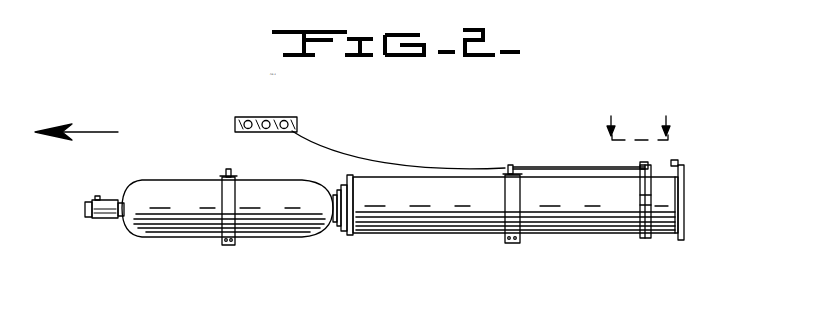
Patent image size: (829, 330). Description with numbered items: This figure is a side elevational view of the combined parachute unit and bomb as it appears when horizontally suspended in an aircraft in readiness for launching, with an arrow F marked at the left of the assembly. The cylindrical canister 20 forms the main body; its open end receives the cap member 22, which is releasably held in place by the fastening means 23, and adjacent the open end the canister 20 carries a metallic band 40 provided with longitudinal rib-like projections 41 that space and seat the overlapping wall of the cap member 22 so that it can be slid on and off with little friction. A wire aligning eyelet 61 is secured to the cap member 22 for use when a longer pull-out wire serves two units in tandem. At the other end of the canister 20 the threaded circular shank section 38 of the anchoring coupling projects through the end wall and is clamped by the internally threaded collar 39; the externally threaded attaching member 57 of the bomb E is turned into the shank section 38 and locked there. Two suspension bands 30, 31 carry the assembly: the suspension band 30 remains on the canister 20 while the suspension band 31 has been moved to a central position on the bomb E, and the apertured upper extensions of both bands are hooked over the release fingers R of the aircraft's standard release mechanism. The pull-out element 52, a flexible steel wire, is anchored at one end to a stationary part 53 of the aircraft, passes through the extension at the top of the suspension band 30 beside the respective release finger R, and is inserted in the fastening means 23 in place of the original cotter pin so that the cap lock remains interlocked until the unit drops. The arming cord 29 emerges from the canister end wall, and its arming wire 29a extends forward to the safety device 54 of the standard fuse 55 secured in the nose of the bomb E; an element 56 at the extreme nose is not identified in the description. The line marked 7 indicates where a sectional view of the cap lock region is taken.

The direction of flow arrow F is at (76, 118).
The arming cord 29 is at (276, 181).
The arming wire 29a is at (126, 198).
The bomb E is at (186, 236).
The fuse 55 is at (104, 219).
The cap 56 is at (86, 213).
The safety device 54 is at (112, 183).
The suspension band 31 is at (236, 245).
The release fingers R is at (226, 172).
The externally threaded attaching member 57 is at (335, 212).
The threaded circular shank section 38 is at (338, 222).
The collar 39 is at (345, 232).
The canister 20 is at (568, 233).
The suspension band 30 is at (508, 243).
The pull-out element 52 is at (598, 167).
The metallic band 40 is at (650, 238).
The rib-like projections 41 is at (648, 214).
The cap member 22 is at (684, 210).
The fastening means 23 is at (645, 160).
The wire aligning eyelet 61 is at (684, 165).
The stationary part of the aircraft 53 is at (284, 117).
The section line 7- 7 is at (639, 117).